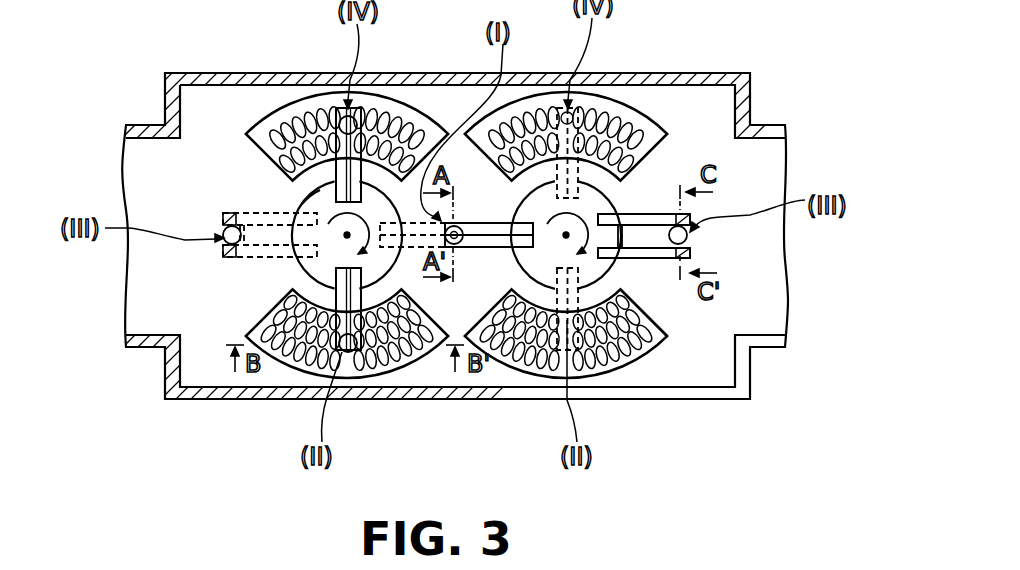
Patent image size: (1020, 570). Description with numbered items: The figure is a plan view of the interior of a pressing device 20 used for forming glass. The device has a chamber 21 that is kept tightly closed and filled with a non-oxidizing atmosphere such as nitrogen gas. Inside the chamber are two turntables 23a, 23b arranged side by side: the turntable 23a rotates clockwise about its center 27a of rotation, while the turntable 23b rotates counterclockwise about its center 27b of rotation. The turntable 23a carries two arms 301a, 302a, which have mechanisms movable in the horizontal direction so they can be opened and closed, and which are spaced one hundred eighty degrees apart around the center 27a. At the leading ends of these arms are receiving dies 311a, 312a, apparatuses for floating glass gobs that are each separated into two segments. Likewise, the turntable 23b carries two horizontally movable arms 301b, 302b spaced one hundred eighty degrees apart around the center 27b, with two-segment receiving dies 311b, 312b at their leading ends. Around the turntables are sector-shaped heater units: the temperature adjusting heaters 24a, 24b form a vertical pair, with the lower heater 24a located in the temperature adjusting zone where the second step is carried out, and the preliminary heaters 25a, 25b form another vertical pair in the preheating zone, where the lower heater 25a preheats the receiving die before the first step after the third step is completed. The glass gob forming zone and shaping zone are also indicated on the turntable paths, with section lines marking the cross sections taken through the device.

The pressing device 20 is at (738, 42).
The chamber 21 is at (458, 76).
The turntable 23a is at (318, 283).
The turntable 23b is at (606, 195).
The temperature adjusting heater 24a is at (255, 333).
The temperature adjusting heater 24b is at (642, 355).
The preliminary heater 25a is at (305, 110).
The preliminary heater 25b is at (618, 118).
The center of rotation 27a is at (312, 203).
The center of rotation 27b is at (648, 330).
The arm 301a is at (432, 250).
The arm 301b is at (482, 248).
The arm 302a is at (320, 168).
The arm 302b is at (622, 248).
The receiving die 311a is at (352, 355).
The receiving die 311b is at (463, 222).
The receiving die 312a is at (352, 120).
The receiving die 312b is at (688, 246).